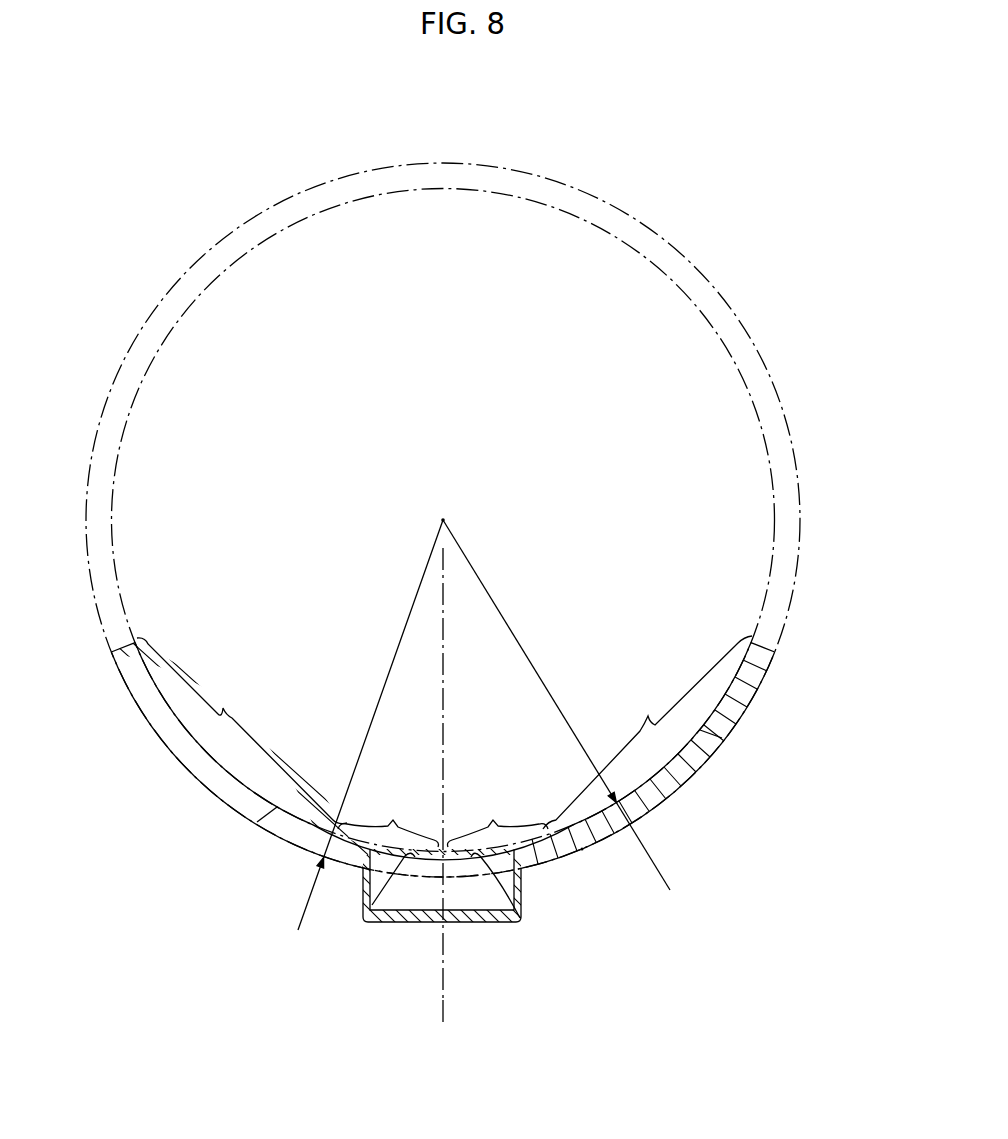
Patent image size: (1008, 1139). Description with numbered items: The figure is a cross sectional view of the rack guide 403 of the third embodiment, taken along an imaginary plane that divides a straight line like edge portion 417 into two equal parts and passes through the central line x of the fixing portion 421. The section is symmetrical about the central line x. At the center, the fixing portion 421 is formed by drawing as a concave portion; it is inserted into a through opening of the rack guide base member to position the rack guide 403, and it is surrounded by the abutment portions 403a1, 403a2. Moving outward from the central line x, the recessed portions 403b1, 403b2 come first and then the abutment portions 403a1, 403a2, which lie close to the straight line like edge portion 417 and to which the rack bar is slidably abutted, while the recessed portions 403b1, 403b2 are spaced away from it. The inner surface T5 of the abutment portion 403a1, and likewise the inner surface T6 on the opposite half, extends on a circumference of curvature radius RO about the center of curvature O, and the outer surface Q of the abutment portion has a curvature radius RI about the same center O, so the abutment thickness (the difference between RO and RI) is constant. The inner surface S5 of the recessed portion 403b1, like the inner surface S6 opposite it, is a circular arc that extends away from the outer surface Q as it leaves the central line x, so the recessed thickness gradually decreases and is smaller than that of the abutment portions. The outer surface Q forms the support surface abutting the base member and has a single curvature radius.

The rack guide 403 is at (646, 136).
The straight line like edge portion 417 is at (765, 646).
The fixing portion 421 is at (486, 897).
The abutment portion 403a1 is at (647, 732).
The abutment portion 403a2 is at (242, 731).
The recessed portion 403b1 is at (498, 818).
The recessed portion 403b2 is at (388, 818).
The inner surface T5 is at (700, 730).
The inner surface T6 is at (277, 807).
The center of curvature O is at (446, 516).
The curvature radius RI is at (575, 721).
The curvature radius RO is at (355, 747).
The inner surface S5 is at (520, 918).
The inner surface S6 is at (372, 905).
The outer surface Q is at (582, 849).
The central line x is at (440, 1022).